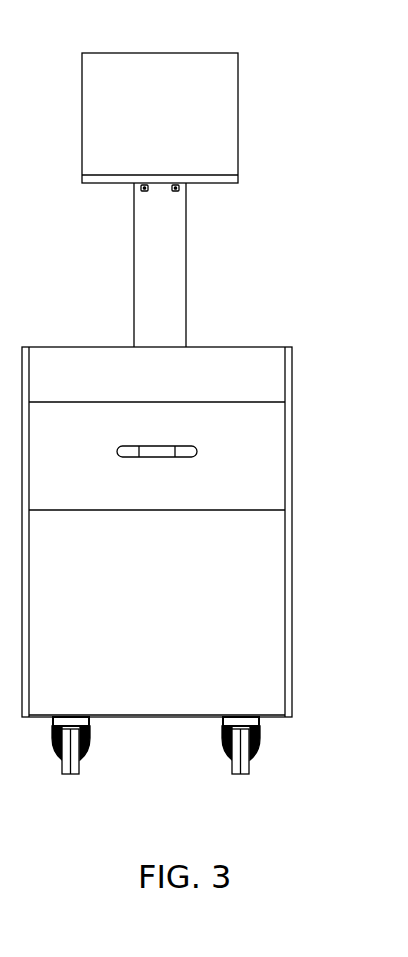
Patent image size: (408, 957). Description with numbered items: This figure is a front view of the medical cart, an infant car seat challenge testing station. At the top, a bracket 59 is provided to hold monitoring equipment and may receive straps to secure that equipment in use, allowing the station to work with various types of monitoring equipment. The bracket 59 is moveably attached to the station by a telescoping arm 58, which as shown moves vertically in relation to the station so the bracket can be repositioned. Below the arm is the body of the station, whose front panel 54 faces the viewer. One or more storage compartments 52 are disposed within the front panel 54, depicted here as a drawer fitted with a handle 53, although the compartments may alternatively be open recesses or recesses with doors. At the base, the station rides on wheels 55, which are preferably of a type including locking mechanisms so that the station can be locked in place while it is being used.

The bracket 59 is at (216, 75).
The telescoping arm 58 is at (164, 243).
The storage compartment 52 is at (248, 461).
The handle 53 is at (197, 447).
The front panel 54 is at (218, 605).
The wheels 55 is at (79, 760).